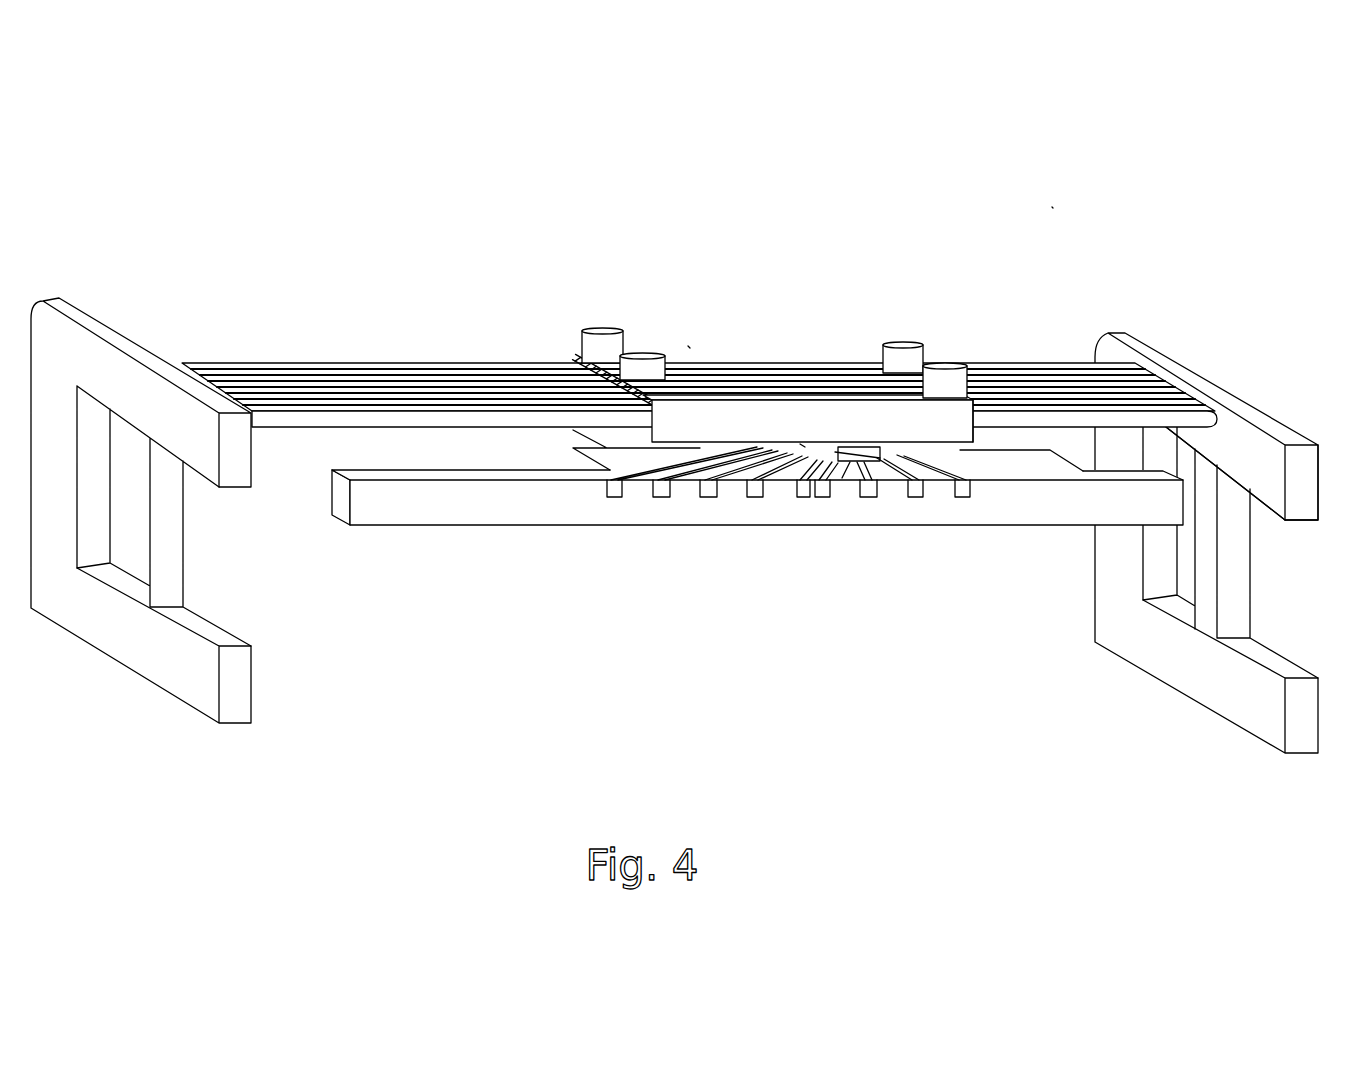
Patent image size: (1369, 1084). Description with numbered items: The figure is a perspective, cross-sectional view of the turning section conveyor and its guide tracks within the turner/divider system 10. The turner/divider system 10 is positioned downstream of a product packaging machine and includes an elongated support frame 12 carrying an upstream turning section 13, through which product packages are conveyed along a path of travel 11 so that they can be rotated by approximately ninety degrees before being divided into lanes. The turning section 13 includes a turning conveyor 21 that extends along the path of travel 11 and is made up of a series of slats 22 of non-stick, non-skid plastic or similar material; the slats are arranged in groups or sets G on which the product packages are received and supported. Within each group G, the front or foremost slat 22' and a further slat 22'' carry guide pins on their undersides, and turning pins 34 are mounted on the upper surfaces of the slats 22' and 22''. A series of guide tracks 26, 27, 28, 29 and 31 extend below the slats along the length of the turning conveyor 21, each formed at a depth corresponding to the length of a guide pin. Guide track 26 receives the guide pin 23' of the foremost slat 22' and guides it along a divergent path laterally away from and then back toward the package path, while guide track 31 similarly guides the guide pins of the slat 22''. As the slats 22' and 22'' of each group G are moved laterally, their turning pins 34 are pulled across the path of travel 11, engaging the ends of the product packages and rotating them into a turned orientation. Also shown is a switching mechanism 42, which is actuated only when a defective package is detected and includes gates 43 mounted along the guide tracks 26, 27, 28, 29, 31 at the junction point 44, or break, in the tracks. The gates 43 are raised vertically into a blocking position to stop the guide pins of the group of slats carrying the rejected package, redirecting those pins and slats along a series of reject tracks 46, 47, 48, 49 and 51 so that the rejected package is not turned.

The turner/divider system 10 is at (1058, 200).
The path of travel 11 is at (445, 362).
The elongated support frame 12 is at (1268, 452).
The turning section 13 is at (1172, 323).
The turning conveyor 21 is at (1027, 373).
The slats 22 is at (698, 333).
The front slat 22' is at (1017, 355).
The slat 22'' is at (570, 345).
The guide pin 23' is at (808, 378).
The guide track 26 is at (966, 498).
The guide track 27 is at (918, 498).
The guide track 28 is at (870, 498).
The guide track 29 is at (845, 500).
The guide track 31 is at (802, 498).
The turning pins 34 is at (942, 372).
The switching mechanism 42 is at (920, 467).
The gates 43 is at (880, 458).
The junction point 44 is at (805, 447).
The reject track 46 is at (823, 498).
The reject track 47 is at (754, 498).
The reject track 48 is at (706, 498).
The reject track 49 is at (658, 498).
The reject track 51 is at (612, 498).
The group of slats G is at (684, 341).